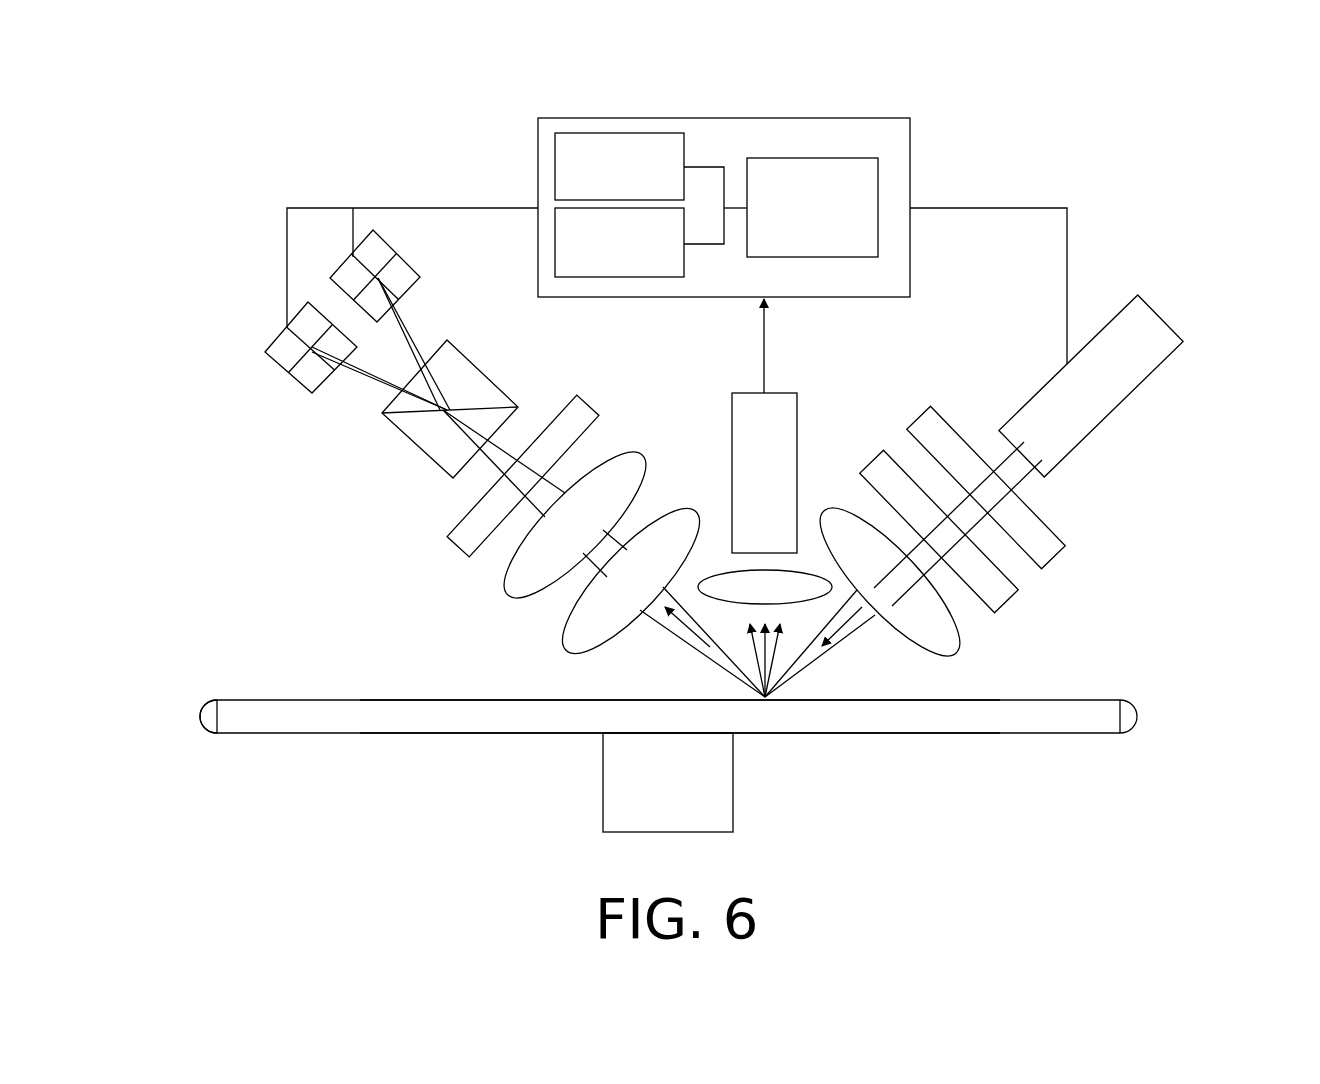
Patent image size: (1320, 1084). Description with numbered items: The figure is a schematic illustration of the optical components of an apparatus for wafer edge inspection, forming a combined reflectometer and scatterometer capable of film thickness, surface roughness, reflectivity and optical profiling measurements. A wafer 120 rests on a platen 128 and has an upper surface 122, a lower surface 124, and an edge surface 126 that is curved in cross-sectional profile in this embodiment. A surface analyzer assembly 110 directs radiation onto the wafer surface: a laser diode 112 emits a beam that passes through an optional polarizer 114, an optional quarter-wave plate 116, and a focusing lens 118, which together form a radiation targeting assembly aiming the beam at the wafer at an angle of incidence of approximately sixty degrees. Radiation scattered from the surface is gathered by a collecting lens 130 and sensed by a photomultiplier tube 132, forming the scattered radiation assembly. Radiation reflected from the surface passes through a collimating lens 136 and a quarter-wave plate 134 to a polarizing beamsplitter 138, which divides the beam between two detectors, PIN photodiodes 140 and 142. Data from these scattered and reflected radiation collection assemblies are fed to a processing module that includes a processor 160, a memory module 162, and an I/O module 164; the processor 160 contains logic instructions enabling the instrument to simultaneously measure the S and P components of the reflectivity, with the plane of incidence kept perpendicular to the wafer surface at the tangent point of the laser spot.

The surface analyzer assembly 110 is at (1041, 112).
The laser diode 112 is at (1160, 315).
The polarizer 114 is at (1064, 548).
The quarter-wave plate 116 is at (1018, 590).
The focusing lens 118 is at (953, 653).
The wafer 120 is at (718, 728).
The upper surface 122 is at (360, 700).
The lower surface 124 is at (360, 733).
The edge surface 126 is at (200, 725).
The platen 128 is at (650, 793).
The collecting lens 130 is at (748, 596).
The photomultiplier tube 132 is at (748, 483).
The quarter-wave plate 134 is at (455, 552).
The collimating lens 136 is at (572, 653).
The polarizing beamsplitter 138 is at (417, 443).
The PIN photodiode 140 is at (312, 393).
The PIN photodiode 142 is at (420, 277).
The processor 160 is at (795, 230).
The memory module 162 is at (603, 190).
The I/O module 164 is at (603, 266).